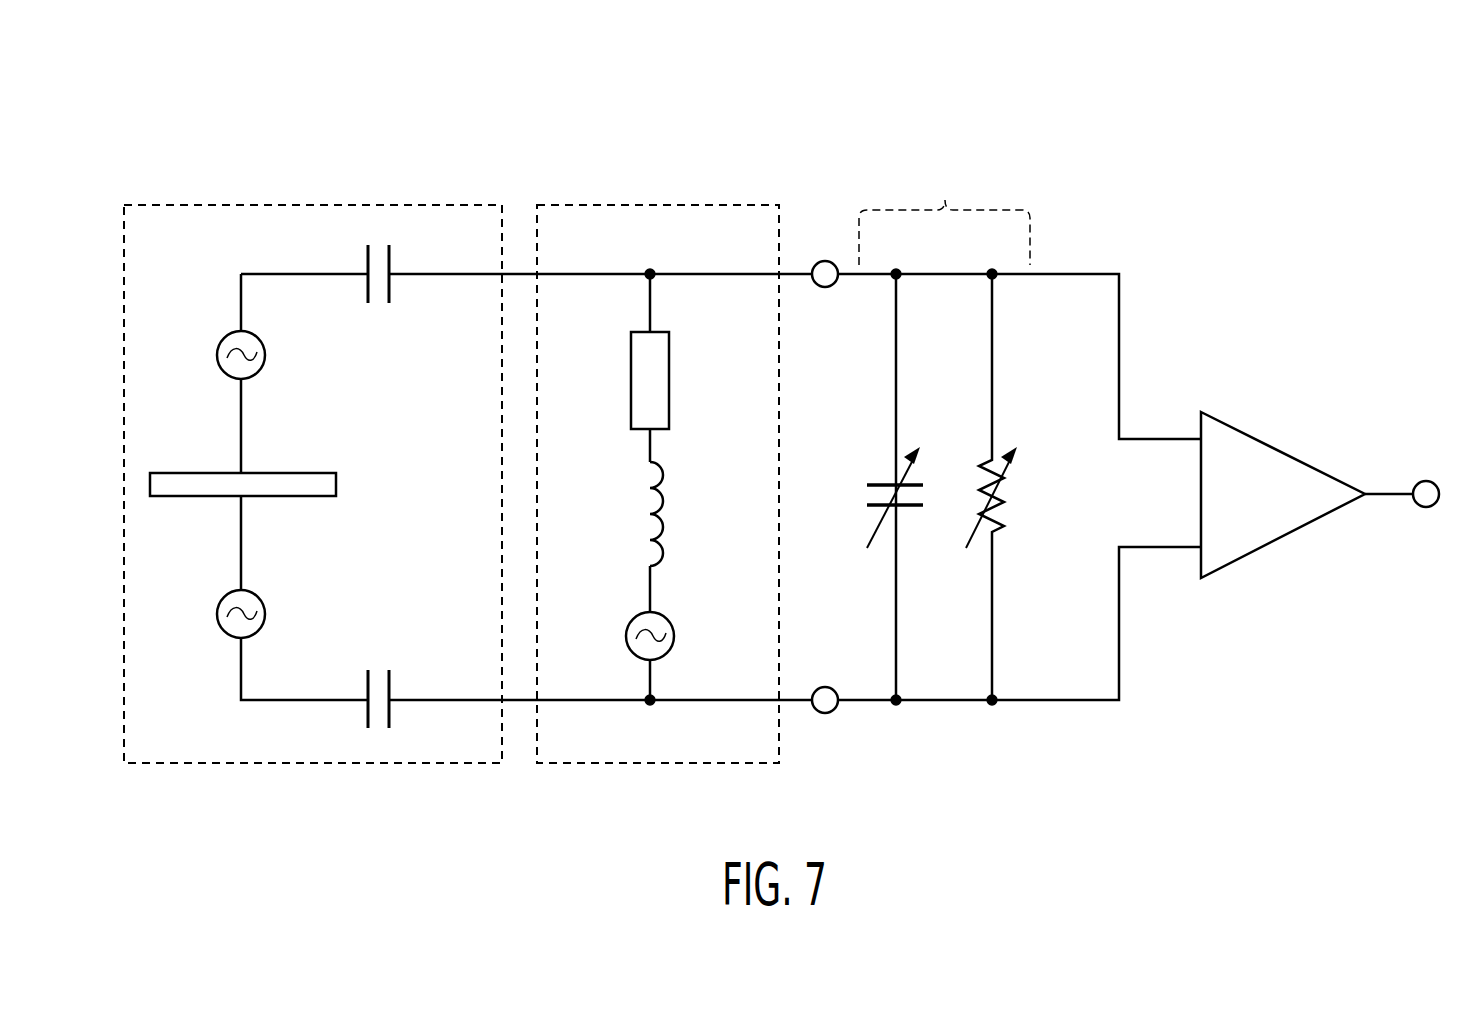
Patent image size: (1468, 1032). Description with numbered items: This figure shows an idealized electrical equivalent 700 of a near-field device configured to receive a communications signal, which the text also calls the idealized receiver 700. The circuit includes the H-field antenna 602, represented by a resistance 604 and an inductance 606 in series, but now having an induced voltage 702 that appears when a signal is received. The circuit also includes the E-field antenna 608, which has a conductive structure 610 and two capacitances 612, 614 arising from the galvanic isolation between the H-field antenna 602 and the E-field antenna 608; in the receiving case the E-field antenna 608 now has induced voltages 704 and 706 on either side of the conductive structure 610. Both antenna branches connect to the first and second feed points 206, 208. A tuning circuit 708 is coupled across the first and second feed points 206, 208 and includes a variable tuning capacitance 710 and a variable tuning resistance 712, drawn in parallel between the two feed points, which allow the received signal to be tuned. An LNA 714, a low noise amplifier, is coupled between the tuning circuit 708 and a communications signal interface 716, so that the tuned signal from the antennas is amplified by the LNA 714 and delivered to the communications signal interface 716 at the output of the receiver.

The idealized electrical equivalent 700 is at (163, 123).
The E-field antenna 608 is at (273, 205).
The H-field antenna 602 is at (650, 205).
The resistance 604 is at (672, 388).
The inductance 606 is at (650, 525).
The conductive structure 610 is at (308, 473).
The capacitance 612 is at (392, 288).
The capacitance 614 is at (392, 686).
The induced voltage 702 is at (676, 638).
The induced voltage 704 is at (262, 342).
The induced voltage 706 is at (266, 613).
The first feed point 206 is at (822, 261).
The second feed point 208 is at (825, 713).
The tuning circuit 708 is at (957, 435).
The variable tuning capacitance 710 is at (870, 485).
The variable tuning resistance 712 is at (1010, 497).
The LNA 714 is at (1283, 448).
The communications signal interface 716 is at (1422, 481).